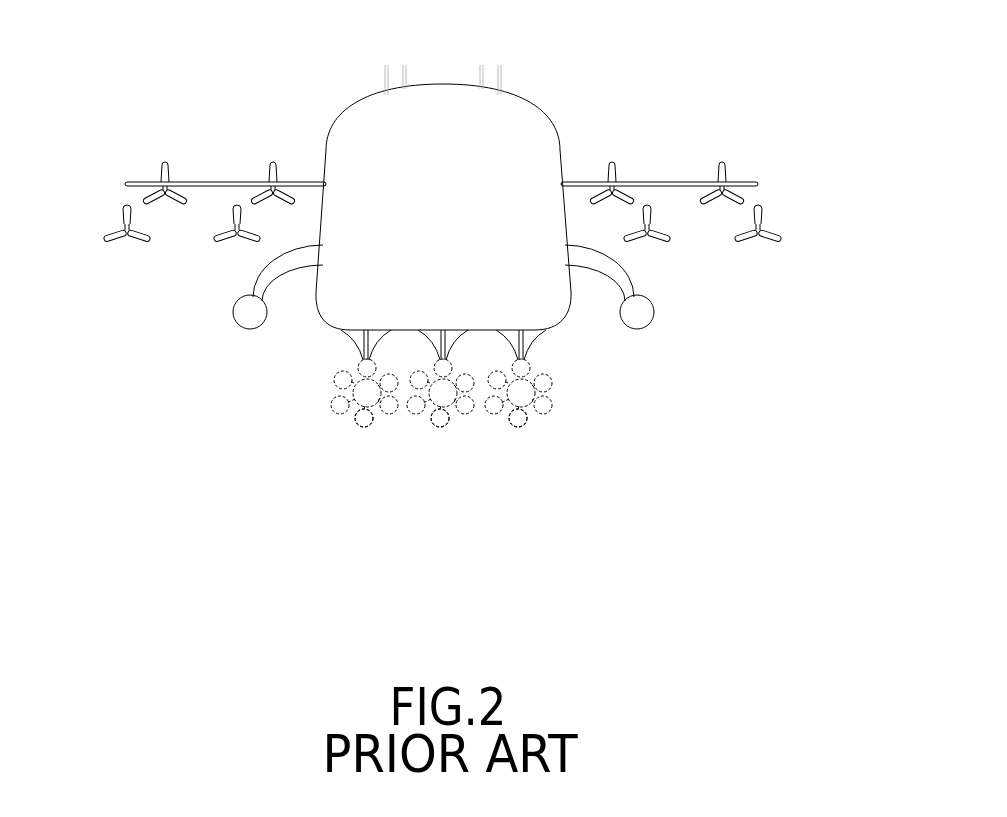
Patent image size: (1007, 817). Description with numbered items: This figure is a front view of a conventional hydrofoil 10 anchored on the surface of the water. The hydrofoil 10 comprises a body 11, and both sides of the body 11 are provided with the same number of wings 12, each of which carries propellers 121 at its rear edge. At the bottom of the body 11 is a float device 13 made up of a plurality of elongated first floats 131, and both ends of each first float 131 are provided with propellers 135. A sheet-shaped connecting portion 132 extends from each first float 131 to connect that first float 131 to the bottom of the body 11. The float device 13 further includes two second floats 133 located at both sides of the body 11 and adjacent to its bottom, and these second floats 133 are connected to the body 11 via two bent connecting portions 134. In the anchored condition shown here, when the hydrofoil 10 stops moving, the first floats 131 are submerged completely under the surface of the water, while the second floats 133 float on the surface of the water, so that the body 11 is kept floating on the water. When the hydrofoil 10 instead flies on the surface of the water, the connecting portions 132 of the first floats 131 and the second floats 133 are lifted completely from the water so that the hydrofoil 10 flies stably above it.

The hydrofoil 10 is at (562, 101).
The body 11 is at (512, 117).
The wings 12 is at (213, 182).
The propellers 121 is at (165, 160).
The float device 13 is at (413, 434).
The first floats 131 is at (362, 393).
The connecting portion 132 is at (365, 337).
The second floats 133 is at (248, 312).
The bent connecting portions 134 is at (268, 278).
The propellers 135 is at (366, 417).